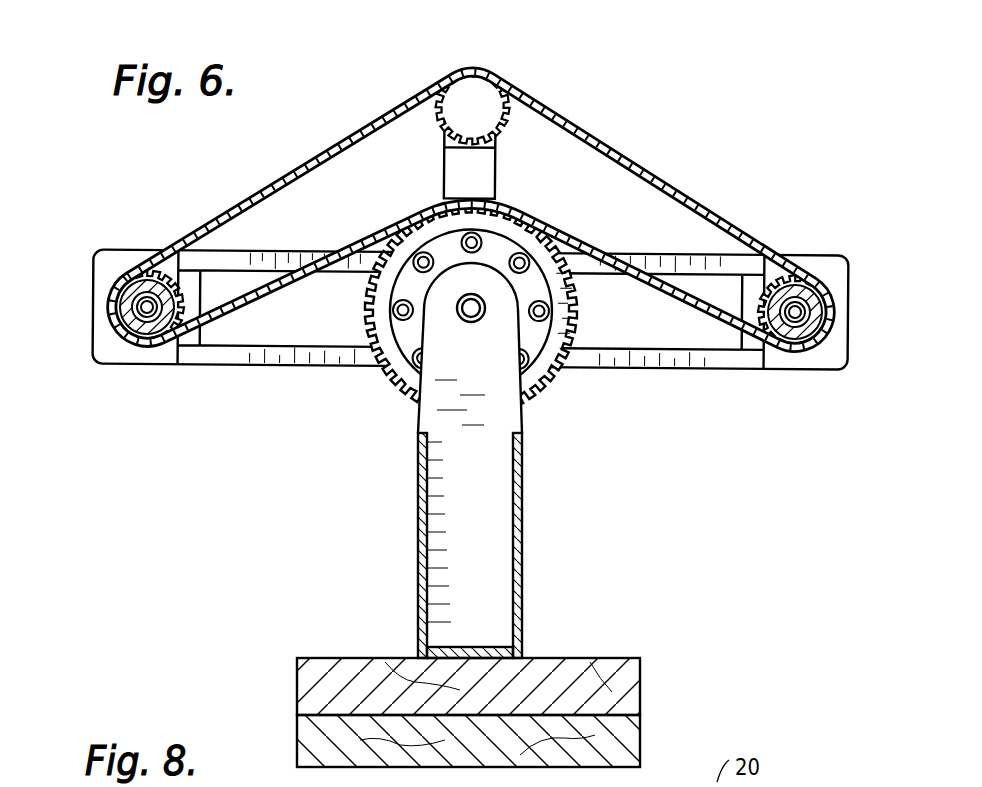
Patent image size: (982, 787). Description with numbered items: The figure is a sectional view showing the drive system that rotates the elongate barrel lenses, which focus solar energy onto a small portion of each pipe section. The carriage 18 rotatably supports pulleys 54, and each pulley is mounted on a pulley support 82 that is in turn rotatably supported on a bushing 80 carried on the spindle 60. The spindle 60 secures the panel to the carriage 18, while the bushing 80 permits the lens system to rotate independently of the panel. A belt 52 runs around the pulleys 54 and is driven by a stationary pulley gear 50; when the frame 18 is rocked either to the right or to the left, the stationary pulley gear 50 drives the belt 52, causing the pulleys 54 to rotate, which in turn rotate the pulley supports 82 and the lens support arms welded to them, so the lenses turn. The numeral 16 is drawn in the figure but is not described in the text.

The pivot arm / support post 16 is at (497, 530).
The carriage 18 is at (100, 258).
The stationary pulley gear 50 is at (548, 378).
The belt 52 is at (623, 153).
The pulley 54 is at (455, 90).
The spindle 60 is at (130, 300).
The bushing 80 is at (140, 318).
The pulley support 82 is at (130, 310).